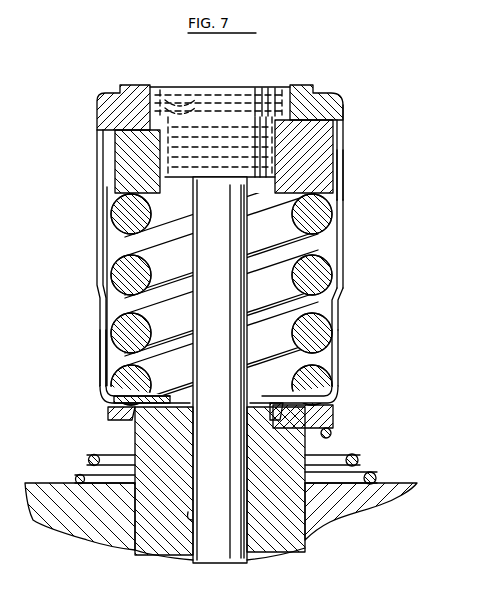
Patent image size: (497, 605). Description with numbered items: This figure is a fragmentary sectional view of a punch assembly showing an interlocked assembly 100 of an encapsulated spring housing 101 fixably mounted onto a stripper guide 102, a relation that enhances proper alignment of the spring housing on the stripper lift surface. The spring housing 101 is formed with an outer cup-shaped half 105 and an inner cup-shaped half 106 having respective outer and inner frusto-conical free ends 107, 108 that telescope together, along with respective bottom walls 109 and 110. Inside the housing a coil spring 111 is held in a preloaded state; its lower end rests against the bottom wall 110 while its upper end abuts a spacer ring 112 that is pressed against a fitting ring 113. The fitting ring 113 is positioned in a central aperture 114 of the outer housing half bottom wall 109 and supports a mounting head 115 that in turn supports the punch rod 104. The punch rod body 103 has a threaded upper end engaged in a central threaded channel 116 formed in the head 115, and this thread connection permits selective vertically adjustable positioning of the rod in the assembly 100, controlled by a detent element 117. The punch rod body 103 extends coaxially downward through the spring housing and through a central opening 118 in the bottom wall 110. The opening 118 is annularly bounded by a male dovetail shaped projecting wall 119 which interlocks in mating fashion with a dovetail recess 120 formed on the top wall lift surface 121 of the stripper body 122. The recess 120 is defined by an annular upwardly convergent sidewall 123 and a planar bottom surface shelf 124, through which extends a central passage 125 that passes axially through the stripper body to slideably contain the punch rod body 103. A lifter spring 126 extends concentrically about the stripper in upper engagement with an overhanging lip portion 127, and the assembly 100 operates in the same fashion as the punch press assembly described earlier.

The interlocked assembly 100 is at (340, 305).
The encapsulated spring housing 101 is at (343, 211).
The stripper guide 102 is at (305, 447).
The punch rod body 103 is at (200, 252).
The punch rod 104 is at (134, 447).
The outer cup-shaped half 105 is at (345, 167).
The inner cup-shaped half 106 is at (337, 353).
The outer frusto-conical free end 107 is at (103, 302).
The inner frusto-conical free end 108 is at (100, 192).
The bottom wall of outer housing half 109 is at (318, 93).
The bottom wall of inner housing half 110 is at (338, 407).
The coil spring 111 is at (116, 360).
The spacer ring 112 is at (118, 158).
The fitting ring 113 is at (345, 118).
The central aperture 114 is at (120, 90).
The mounting head 115 is at (258, 88).
The central threaded channel 116 is at (166, 96).
The detent element 117 is at (168, 122).
The central opening 118 is at (108, 391).
The male dovetail shaped projecting wall 119 is at (330, 392).
The dovetail recess 120 is at (108, 414).
The top wall lift surface 121 is at (108, 399).
The stripper body 122 is at (88, 466).
The annular upwardly convergent sidewall 123 is at (337, 416).
The planar bottom surface shelf 124 is at (270, 420).
The central passage 125 is at (190, 517).
The lifter spring 126 is at (378, 478).
The overhanging lip portion 127 is at (333, 433).